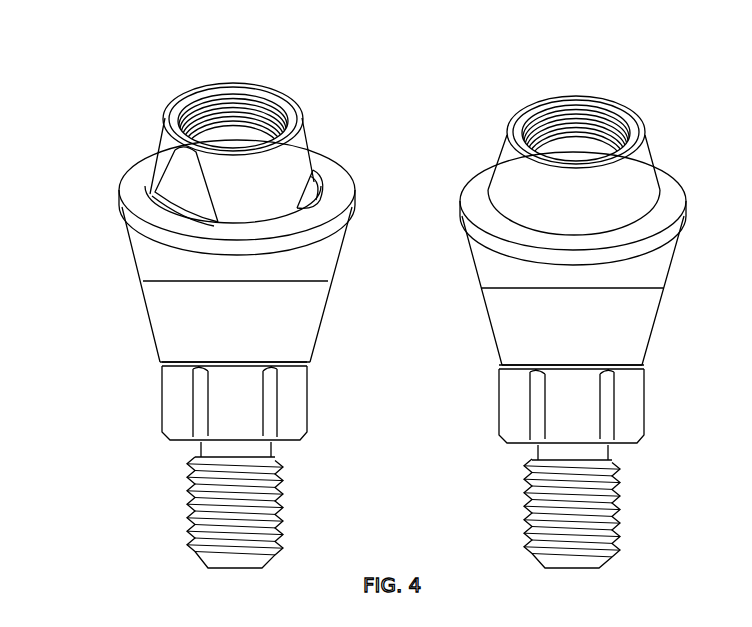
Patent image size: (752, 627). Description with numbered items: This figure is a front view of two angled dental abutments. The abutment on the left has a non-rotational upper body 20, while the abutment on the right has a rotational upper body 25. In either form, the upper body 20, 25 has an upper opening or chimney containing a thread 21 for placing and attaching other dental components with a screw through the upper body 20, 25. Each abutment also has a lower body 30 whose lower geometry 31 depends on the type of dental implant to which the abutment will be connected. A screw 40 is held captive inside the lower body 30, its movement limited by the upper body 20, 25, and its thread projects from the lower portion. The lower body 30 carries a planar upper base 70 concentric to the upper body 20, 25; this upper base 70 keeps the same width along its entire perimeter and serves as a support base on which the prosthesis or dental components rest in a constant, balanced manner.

The non-rotational upper body 20 is at (277, 95).
The thread 21 is at (223, 105).
The rotational upper body 25 is at (618, 115).
The lower body 30 is at (183, 313).
The lower geometry 31 is at (290, 405).
The screw 40 is at (212, 523).
The upper base 70 is at (133, 185).